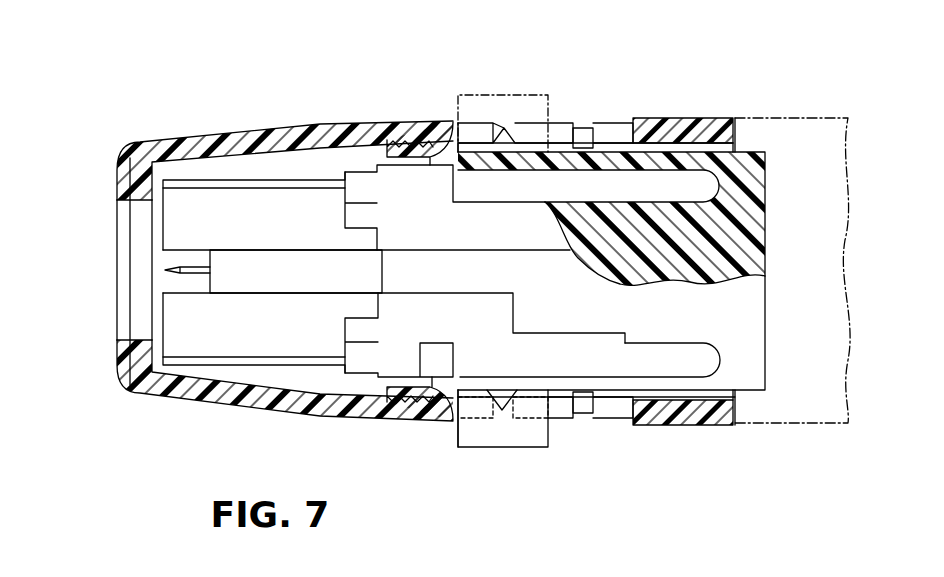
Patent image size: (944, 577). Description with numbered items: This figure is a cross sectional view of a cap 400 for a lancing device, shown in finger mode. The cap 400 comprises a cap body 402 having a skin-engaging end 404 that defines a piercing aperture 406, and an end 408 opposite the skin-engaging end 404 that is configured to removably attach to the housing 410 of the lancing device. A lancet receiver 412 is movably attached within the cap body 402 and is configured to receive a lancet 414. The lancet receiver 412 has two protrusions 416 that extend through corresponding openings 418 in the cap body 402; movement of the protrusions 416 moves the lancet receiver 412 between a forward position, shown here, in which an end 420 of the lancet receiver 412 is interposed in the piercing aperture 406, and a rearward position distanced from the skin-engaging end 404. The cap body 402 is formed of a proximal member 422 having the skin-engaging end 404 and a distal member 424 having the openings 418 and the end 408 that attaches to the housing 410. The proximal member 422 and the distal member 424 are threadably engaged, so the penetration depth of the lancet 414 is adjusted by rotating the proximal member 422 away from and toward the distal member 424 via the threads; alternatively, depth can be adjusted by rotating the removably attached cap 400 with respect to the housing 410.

The cap 400 is at (180, 84).
The cap body 402 is at (407, 118).
The skin-engaging end 404 is at (117, 152).
The piercing aperture 406 is at (133, 280).
The end opposite the skin-engaging end 408 is at (720, 127).
The housing 410 is at (795, 407).
The lancet receiver 412 is at (272, 343).
The lancet 414 is at (293, 282).
The protrusion 416 is at (530, 108).
The opening 418 is at (583, 130).
The end of the lancet receiver 420 is at (157, 233).
The proximal member 422 is at (353, 413).
The distal member 424 is at (446, 488).